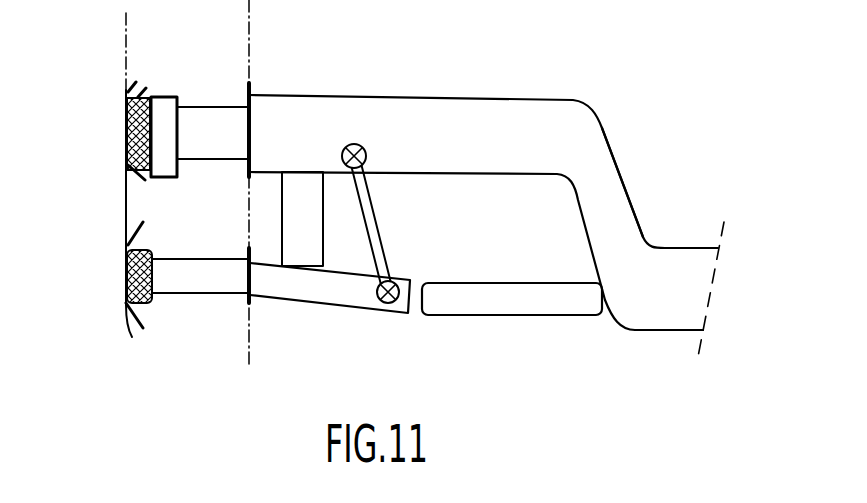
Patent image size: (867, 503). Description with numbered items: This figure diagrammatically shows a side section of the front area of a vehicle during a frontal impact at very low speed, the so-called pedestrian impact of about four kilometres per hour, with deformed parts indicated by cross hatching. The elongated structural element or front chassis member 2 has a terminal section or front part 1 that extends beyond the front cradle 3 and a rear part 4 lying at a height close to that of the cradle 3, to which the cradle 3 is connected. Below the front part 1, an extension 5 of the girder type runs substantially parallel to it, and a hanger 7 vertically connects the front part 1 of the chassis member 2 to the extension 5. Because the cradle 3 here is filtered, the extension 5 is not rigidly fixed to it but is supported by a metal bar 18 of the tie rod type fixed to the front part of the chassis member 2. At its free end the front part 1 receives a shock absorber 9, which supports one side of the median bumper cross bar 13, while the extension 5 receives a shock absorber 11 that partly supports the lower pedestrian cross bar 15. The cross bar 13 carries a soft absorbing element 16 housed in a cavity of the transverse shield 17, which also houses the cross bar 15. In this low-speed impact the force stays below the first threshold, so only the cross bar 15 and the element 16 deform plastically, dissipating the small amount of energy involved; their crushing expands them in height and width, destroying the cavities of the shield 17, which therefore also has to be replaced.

The terminal section 1 is at (429, 97).
The elongated structural element 2 is at (632, 178).
The structural element 3 is at (516, 317).
The rear part 4 is at (670, 330).
The first elongate part of the extension type 5 is at (312, 305).
The second elongated part of the hanger type 7 is at (282, 206).
The shock absorber 9 is at (215, 107).
The shock absorber 11 is at (197, 293).
The median bumper cross bar 13 is at (164, 97).
The lower bumper cross bar 15 is at (147, 306).
The additional element for absorbing soft impacts 16 is at (126, 135).
The transverse shell or shield 17 is at (126, 200).
The metal bar 18 is at (385, 237).